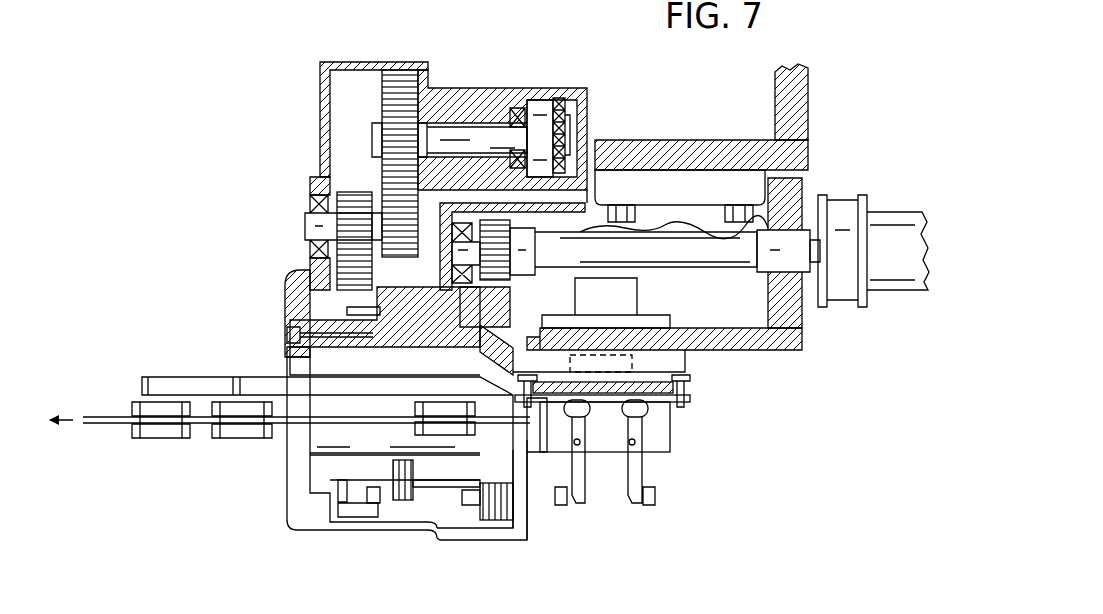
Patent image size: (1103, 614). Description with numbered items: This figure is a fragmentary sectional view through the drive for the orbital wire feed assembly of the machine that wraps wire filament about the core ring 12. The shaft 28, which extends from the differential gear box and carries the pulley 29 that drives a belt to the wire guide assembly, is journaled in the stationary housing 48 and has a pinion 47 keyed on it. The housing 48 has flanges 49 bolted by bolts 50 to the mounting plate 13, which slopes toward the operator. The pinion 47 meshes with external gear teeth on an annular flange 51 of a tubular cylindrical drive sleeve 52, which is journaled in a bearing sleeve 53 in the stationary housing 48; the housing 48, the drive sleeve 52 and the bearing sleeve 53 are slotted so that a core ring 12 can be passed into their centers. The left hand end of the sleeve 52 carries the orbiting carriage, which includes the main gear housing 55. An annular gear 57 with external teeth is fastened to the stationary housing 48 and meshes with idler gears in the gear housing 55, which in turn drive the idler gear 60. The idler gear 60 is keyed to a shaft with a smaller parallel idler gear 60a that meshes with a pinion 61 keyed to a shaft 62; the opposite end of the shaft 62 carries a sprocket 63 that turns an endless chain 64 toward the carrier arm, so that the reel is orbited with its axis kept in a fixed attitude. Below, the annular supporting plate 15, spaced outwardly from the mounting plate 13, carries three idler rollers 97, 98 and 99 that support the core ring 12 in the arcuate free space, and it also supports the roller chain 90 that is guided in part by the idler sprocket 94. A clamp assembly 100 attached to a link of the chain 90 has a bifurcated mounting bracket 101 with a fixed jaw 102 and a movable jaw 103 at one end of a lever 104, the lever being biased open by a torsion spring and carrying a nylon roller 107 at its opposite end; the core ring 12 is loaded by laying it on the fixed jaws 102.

The core ring 12 is at (97, 426).
The mounting plate 13 is at (625, 140).
The annular supporting plate 15 is at (220, 377).
The shaft 28 is at (716, 268).
The pulley 29 is at (866, 200).
The pinion 47 is at (514, 262).
The stationary housing 48 is at (770, 352).
The flanges 49 is at (668, 224).
The bolts 50 is at (608, 212).
The annular flange 51 is at (510, 512).
The drive sleeve 52 is at (447, 488).
The bearing sleeve 53 is at (410, 500).
The main gear housing 55 is at (286, 292).
The annular gear 57 is at (345, 518).
The idler gear 60 is at (325, 195).
The idler gear 60a is at (365, 212).
The pinion 61 is at (395, 80).
The shaft 62 is at (478, 125).
The sprocket 63 is at (547, 102).
The endless chain 64 is at (558, 100).
The roller chain 90 is at (696, 386).
The idler sprocket 94 is at (683, 374).
The idler roller 97 is at (156, 440).
The idler roller 98 is at (237, 440).
The idler roller 99 is at (418, 432).
The clamp assembly 100 is at (664, 462).
The bifurcated mounting bracket 101 is at (632, 475).
The fixed jaw 102 is at (511, 467).
The movable jaw 103 is at (692, 404).
The lever 104 is at (552, 445).
The roller 107 is at (606, 425).